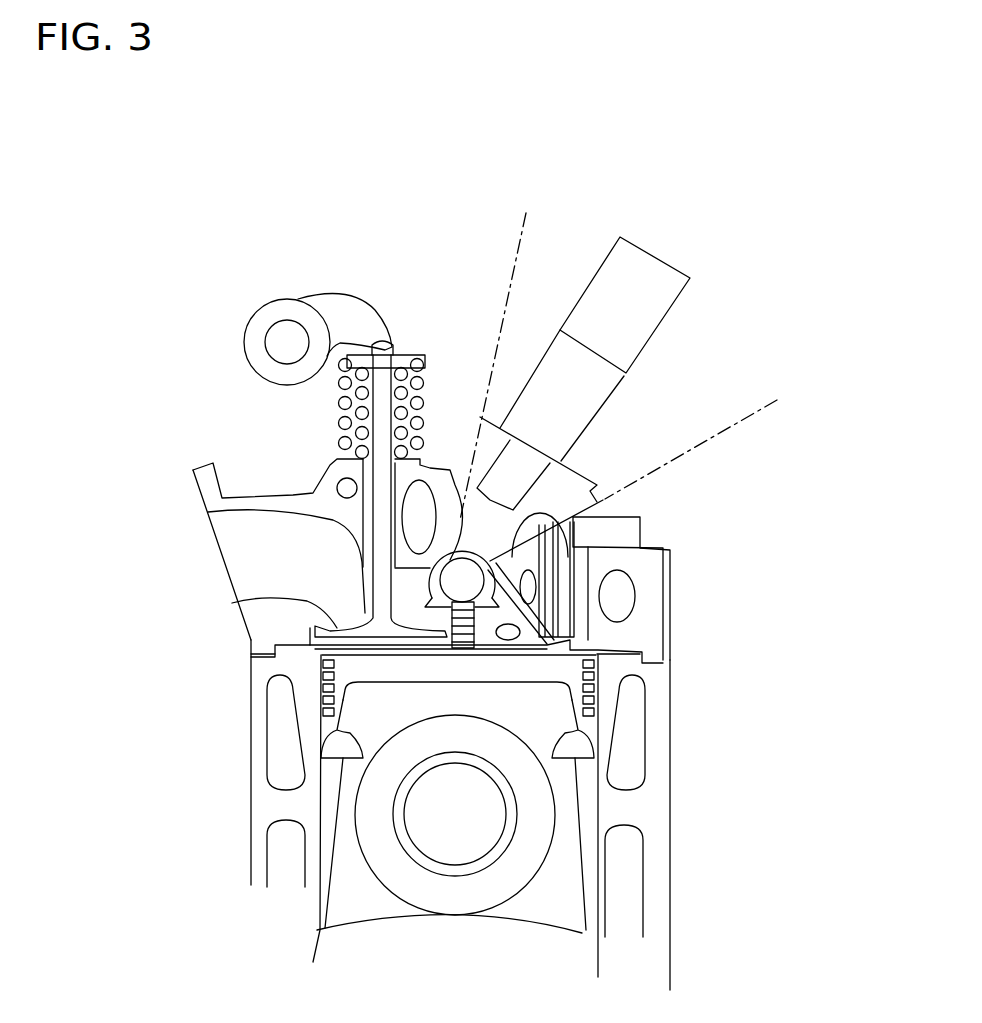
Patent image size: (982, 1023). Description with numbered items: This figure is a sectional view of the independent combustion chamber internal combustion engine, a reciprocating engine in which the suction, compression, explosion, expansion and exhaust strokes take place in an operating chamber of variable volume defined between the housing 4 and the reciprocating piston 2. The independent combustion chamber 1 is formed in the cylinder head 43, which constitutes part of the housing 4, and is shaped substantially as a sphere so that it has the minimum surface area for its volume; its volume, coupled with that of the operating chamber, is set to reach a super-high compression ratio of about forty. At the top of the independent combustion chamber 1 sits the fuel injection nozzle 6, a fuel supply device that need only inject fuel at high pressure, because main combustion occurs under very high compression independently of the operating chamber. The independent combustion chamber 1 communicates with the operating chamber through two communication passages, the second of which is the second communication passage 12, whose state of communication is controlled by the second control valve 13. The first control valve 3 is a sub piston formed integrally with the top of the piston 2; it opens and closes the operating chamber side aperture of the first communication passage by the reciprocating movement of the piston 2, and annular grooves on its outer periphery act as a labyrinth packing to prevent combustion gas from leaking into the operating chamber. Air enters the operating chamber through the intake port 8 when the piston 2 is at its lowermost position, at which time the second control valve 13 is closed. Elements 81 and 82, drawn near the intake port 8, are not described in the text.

The independent combustion chamber 1 is at (452, 578).
The piston 2 is at (540, 665).
The first control valve 3 is at (320, 657).
The housing 4 is at (222, 745).
The fuel injection nozzle 6 is at (665, 337).
The intake port 8 is at (205, 561).
The second communication passage 12 is at (508, 604).
The second control valve 13 is at (567, 643).
The cylinder head 43 is at (160, 471).
The intake valve 81 is at (373, 613).
The rocker arm / cam follower 82 is at (286, 293).